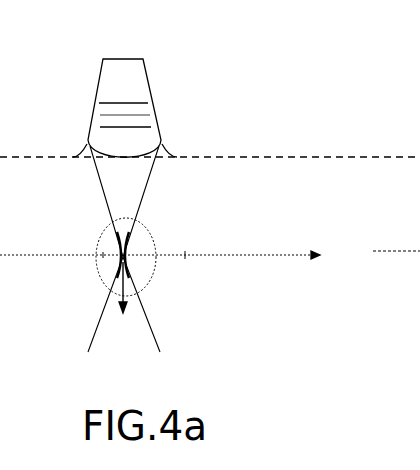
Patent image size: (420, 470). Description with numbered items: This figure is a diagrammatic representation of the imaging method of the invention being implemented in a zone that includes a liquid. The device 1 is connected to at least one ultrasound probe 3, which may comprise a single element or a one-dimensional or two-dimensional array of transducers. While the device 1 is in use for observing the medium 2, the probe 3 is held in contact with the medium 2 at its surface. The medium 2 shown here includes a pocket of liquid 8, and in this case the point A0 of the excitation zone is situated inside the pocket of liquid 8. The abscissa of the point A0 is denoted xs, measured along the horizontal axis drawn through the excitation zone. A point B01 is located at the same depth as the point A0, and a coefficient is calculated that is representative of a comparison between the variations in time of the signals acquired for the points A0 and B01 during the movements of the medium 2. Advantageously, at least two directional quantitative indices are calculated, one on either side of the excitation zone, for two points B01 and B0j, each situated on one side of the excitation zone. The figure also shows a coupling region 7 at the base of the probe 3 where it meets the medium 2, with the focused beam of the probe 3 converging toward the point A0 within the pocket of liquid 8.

The device 1 is at (121, 59).
The medium 2 is at (210, 283).
The ultrasound probe 3 is at (124, 88).
The coupling liquid meniscus 7 is at (160, 147).
The pocket of liquid 8 is at (138, 242).
The point of the excitation zone A0 is at (119, 247).
The point B01 is at (88, 268).
The point B0j' B0j is at (201, 268).
The abscissa of point A0 xs is at (137, 287).